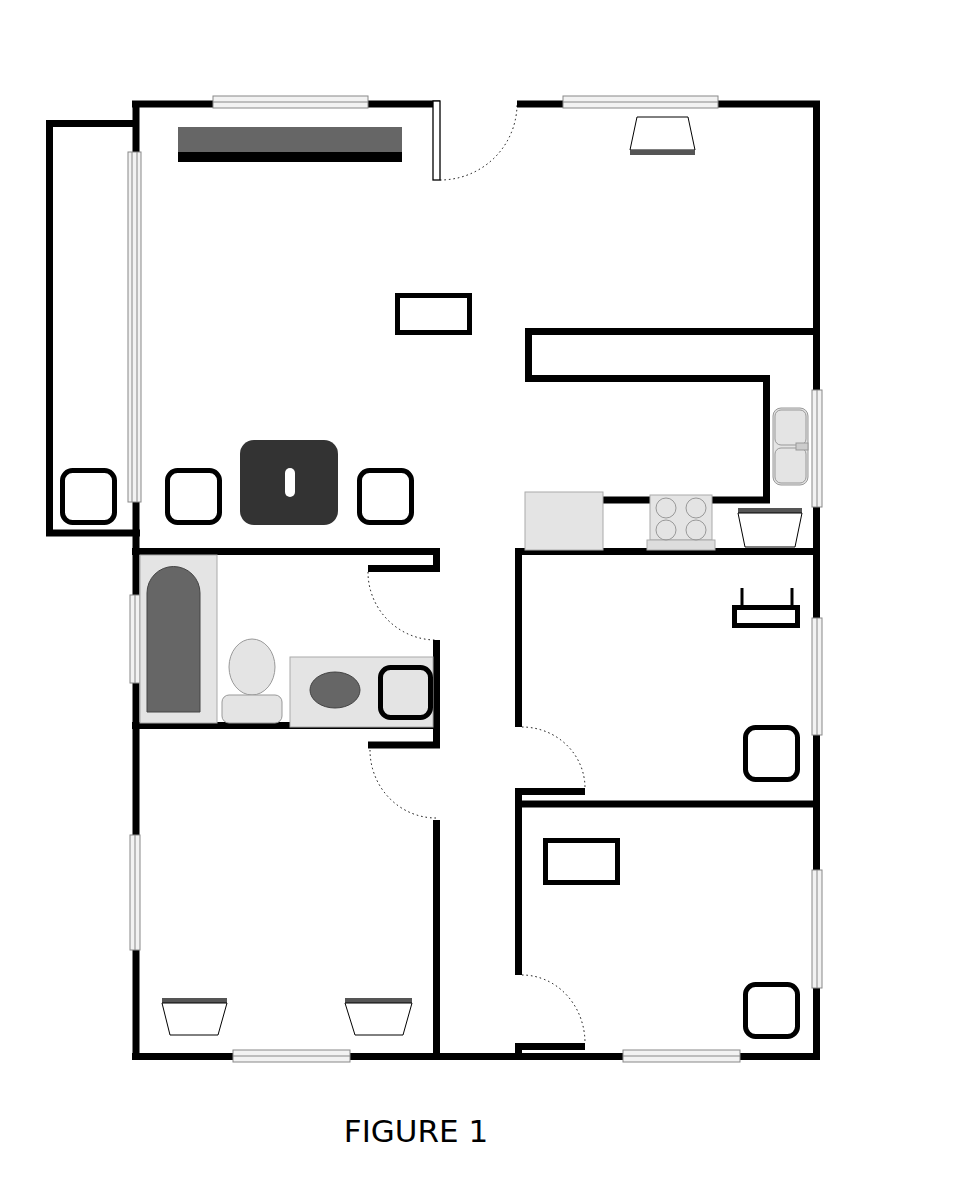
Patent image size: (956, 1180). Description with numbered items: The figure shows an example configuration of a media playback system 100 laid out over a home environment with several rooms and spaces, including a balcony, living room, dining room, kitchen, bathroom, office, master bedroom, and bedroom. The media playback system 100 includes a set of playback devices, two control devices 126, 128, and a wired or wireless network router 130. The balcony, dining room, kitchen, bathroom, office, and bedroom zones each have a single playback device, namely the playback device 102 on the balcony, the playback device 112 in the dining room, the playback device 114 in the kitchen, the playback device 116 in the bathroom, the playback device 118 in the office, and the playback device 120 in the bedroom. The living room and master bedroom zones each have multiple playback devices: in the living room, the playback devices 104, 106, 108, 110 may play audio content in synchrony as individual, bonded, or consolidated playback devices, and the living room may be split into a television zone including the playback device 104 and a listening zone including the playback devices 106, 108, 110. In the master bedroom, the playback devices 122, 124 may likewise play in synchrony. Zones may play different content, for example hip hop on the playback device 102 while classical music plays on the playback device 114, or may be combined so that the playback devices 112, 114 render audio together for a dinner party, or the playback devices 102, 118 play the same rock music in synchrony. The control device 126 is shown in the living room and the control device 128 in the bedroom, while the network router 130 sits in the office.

The media playback system 100 is at (521, 66).
The playback device 102 is at (71, 507).
The playback device 104 is at (272, 151).
The playback device 106 is at (176, 507).
The playback device 108 is at (368, 507).
The playback device 110 is at (271, 466).
The playback device 112 is at (646, 147).
The playback device 114 is at (753, 544).
The playback device 116 is at (388, 703).
The playback device 118 is at (755, 764).
The playback device 120 is at (755, 1021).
The playback device 122 is at (177, 1033).
The playback device 124 is at (361, 1033).
The control device 126 is at (416, 325).
The control device 128 is at (565, 872).
The network router 130 is at (730, 618).